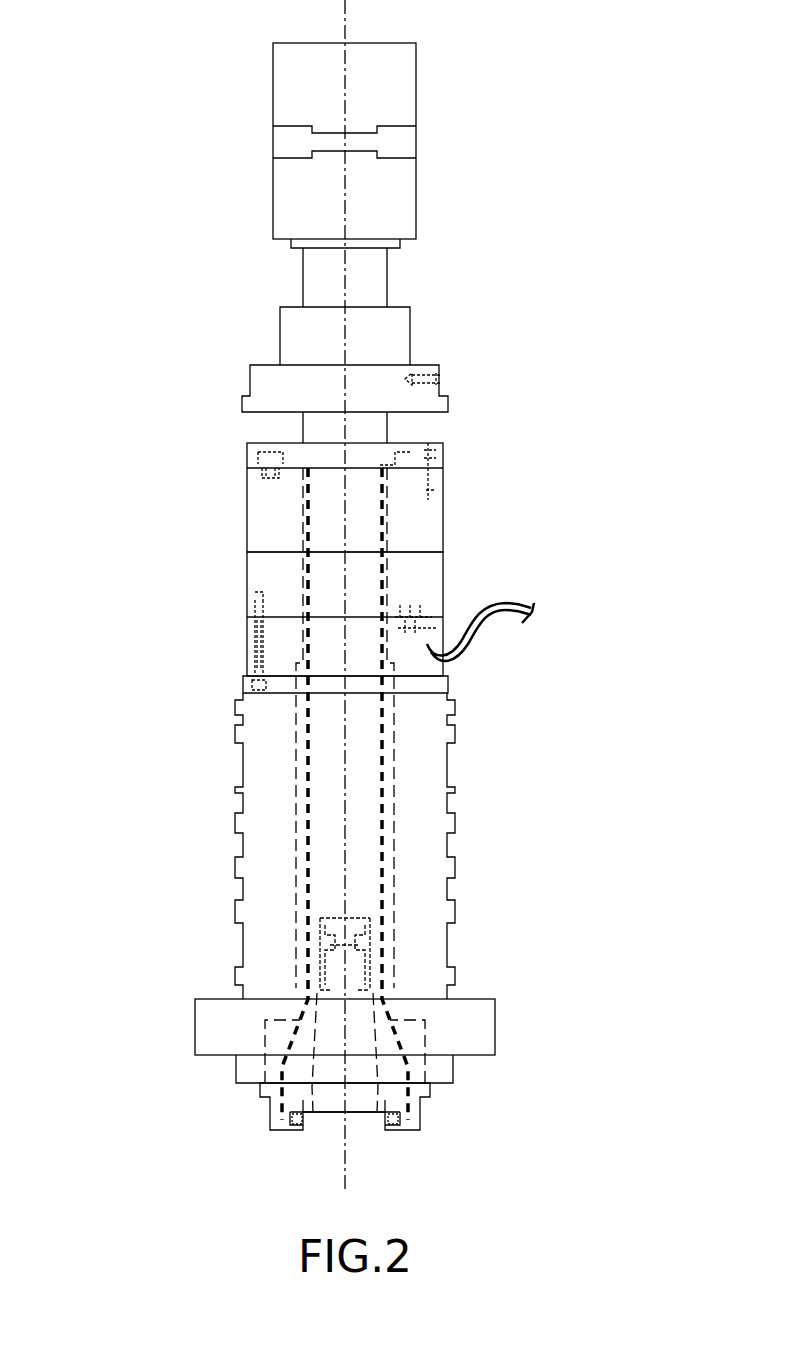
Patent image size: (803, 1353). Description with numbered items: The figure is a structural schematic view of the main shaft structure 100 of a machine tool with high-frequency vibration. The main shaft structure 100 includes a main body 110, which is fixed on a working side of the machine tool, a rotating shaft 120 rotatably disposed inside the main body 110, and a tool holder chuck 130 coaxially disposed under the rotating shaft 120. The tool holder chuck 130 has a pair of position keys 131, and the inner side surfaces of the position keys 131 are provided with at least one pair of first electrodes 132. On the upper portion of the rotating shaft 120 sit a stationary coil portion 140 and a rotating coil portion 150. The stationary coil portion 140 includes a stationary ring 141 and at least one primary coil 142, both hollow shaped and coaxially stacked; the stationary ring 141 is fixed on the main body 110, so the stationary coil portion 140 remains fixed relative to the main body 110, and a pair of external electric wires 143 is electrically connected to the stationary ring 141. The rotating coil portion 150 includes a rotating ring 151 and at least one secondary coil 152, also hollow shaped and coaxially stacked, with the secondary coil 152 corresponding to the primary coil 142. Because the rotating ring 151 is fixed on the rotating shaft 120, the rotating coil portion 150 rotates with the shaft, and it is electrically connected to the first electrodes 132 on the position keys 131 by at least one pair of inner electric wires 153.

The main shaft structure 100 is at (642, 42).
The main body 110 is at (445, 772).
The rotating shaft 120 is at (400, 721).
The tool holder chuck 130 is at (424, 1105).
The position keys 131 is at (413, 1130).
The first electrodes 132 is at (385, 1115).
The stationary coil portion 140 is at (118, 573).
The stationary ring 141 is at (255, 636).
The primary coil 142 is at (247, 583).
The external electric wires 143 is at (495, 607).
The rotating coil portion 150 is at (118, 450).
The rotating ring 151 is at (247, 455).
The secondary coil 152 is at (247, 509).
The inner electric wires 153 is at (295, 768).